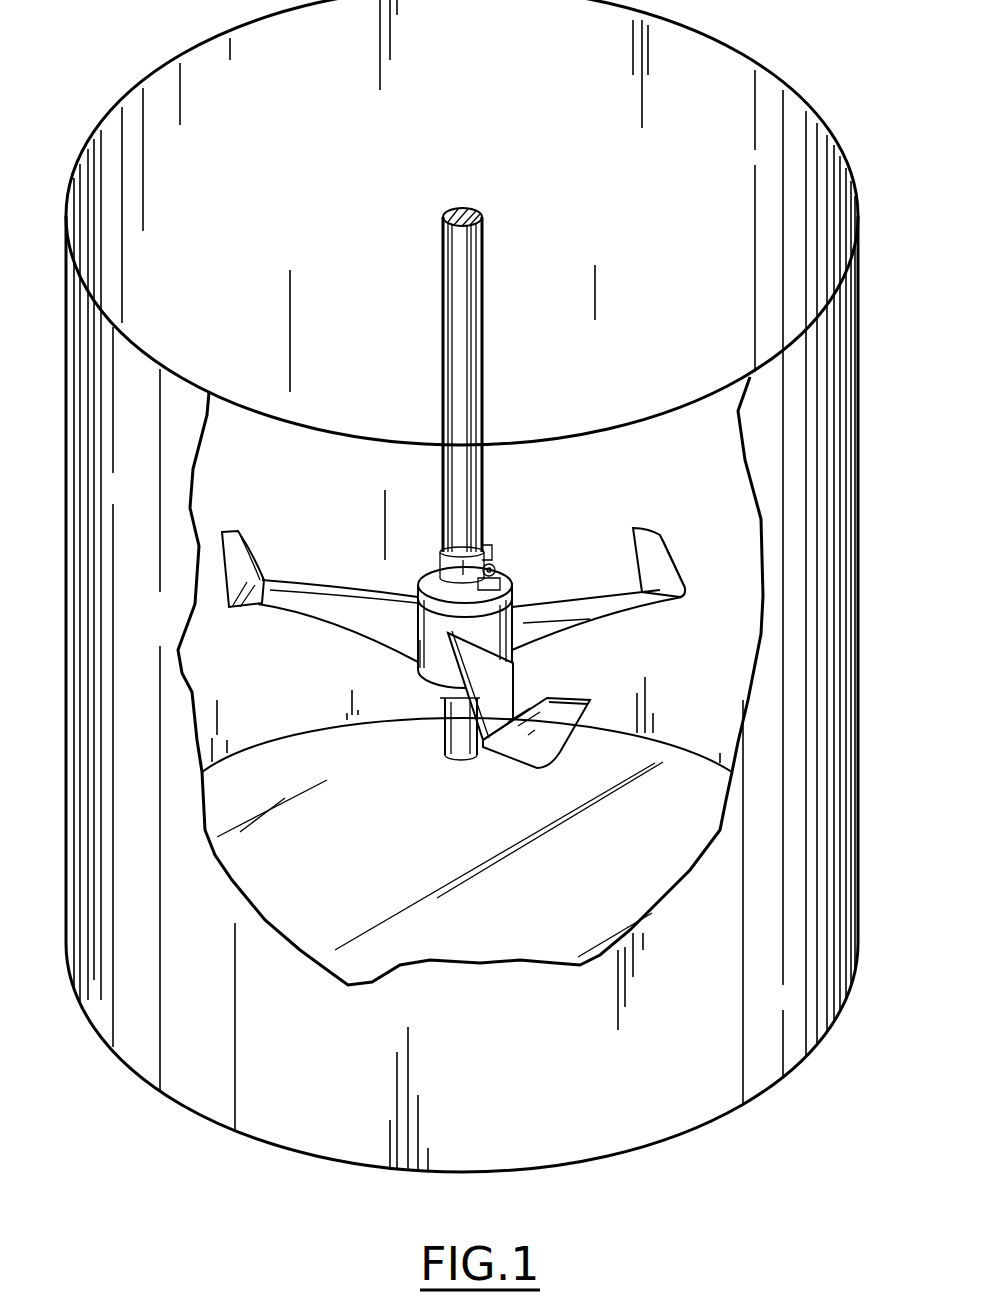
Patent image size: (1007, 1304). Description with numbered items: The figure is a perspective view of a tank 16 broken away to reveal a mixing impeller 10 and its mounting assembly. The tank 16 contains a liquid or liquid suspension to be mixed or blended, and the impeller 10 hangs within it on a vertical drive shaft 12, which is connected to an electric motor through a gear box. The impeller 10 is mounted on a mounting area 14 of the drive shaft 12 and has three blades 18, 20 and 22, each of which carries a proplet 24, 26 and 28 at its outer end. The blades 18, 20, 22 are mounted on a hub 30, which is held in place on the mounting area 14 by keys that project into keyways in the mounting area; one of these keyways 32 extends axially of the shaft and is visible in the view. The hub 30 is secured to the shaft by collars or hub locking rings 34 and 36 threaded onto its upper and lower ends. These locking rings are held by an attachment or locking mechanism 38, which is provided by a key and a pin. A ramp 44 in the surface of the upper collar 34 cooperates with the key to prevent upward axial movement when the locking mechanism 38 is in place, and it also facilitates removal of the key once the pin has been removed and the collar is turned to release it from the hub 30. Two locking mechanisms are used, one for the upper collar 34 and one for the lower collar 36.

The mixing impeller 10 is at (565, 561).
The drive shaft 12 is at (468, 483).
The mounting area 14 is at (443, 558).
The tank 16 is at (848, 756).
The blade 18 is at (337, 627).
The blade 20 is at (505, 682).
The blade 22 is at (587, 618).
The proplet 24 is at (557, 743).
The proplet 26 is at (667, 568).
The proplet 28 is at (232, 553).
The hub 30 is at (435, 663).
The keyway 32 is at (485, 545).
The upper collar or hub locking ring 34 is at (425, 590).
The lower collar or hub locking ring 36 is at (437, 700).
The locking mechanism 38 is at (503, 570).
The ramp 44 is at (517, 603).